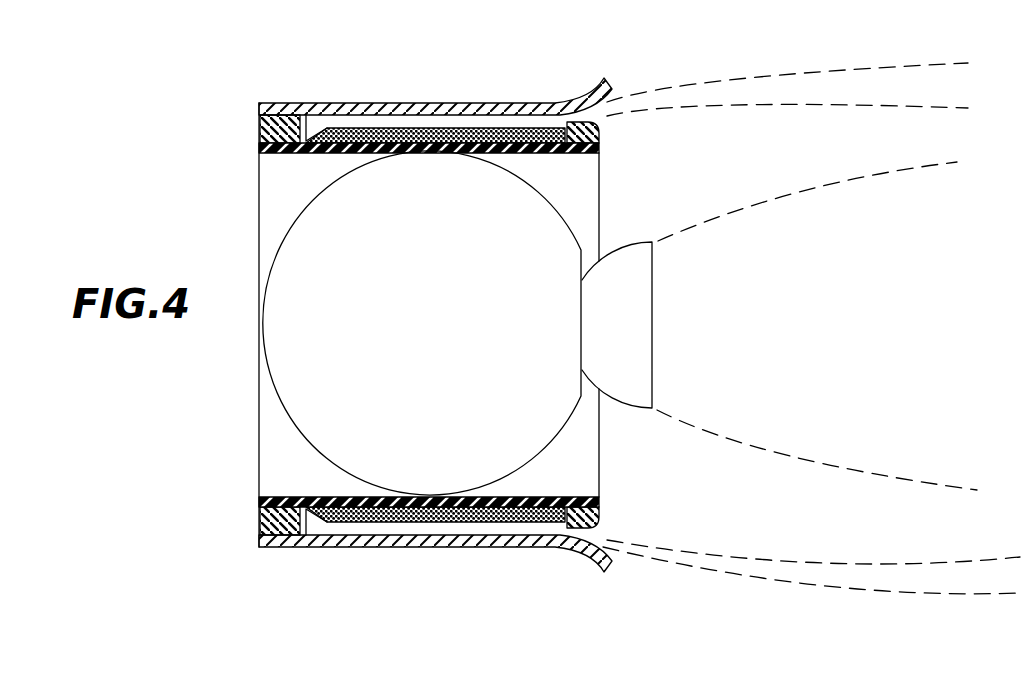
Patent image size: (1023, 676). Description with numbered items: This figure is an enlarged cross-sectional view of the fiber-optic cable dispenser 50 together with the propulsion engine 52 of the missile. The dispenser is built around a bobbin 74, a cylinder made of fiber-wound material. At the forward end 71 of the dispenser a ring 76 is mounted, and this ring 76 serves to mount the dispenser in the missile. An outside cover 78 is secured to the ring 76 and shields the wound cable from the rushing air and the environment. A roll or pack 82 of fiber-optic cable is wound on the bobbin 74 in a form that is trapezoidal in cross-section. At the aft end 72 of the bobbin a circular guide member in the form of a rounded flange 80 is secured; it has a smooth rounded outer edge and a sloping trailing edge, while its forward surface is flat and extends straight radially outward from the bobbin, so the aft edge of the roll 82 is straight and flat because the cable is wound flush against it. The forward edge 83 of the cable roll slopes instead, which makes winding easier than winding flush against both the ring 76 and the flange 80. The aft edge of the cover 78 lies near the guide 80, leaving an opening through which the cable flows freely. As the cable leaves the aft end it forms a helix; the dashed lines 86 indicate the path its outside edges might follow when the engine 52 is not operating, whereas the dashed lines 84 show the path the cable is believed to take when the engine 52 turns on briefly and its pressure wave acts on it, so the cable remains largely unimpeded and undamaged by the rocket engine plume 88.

The fiber-optic cable dispenser 50 is at (268, 568).
The engine 52 is at (293, 440).
The forward end 71 is at (246, 178).
The aft end 72 is at (643, 185).
The bobbin 74 is at (300, 157).
The ring 76 is at (260, 123).
The outside cover 78 is at (375, 102).
The guide member 80 is at (600, 128).
The roll of fiber-optic cable 82 is at (414, 128).
The forward edge of the cable roll 83 is at (318, 128).
The dashed lines (cable path with engine on) 84 is at (667, 90).
The dashed lines (cable path with engine off) 86 is at (856, 109).
The rocket engine plume 88 is at (745, 207).